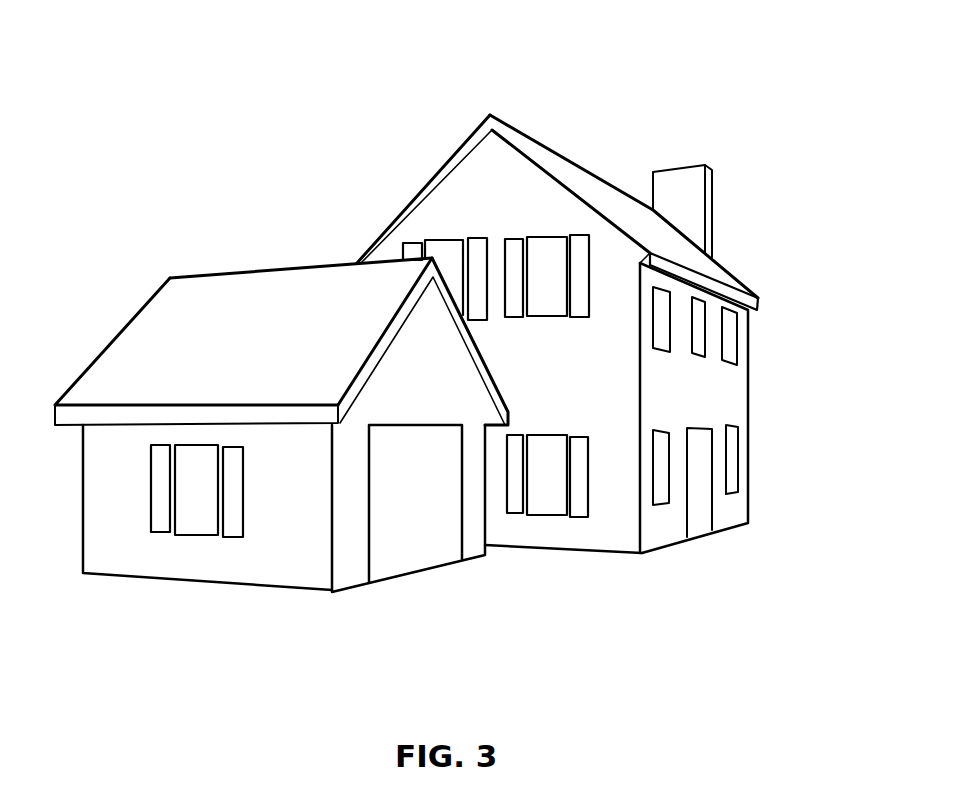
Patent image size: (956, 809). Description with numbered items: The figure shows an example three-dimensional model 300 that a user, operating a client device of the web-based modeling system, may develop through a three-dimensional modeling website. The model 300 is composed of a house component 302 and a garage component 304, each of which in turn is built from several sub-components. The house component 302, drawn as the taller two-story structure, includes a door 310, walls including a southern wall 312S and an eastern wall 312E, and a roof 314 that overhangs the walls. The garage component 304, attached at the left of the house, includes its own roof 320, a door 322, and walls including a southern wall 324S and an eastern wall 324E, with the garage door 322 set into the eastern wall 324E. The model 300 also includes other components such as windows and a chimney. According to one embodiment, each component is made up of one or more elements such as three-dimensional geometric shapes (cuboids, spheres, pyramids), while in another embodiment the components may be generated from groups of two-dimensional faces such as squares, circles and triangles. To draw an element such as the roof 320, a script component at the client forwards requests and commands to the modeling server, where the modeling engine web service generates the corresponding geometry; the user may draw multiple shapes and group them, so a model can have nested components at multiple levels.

The 3D model 300 is at (367, 66).
The house component 302 is at (580, 163).
The garage component 304 is at (258, 268).
The door 310 is at (697, 512).
The eastern wall 312E is at (735, 393).
The southern wall 312S is at (585, 532).
The roof 314 is at (717, 275).
The roof 320 is at (115, 360).
The door 322 is at (413, 545).
The eastern wall 324E is at (347, 557).
The southern wall 324S is at (148, 557).